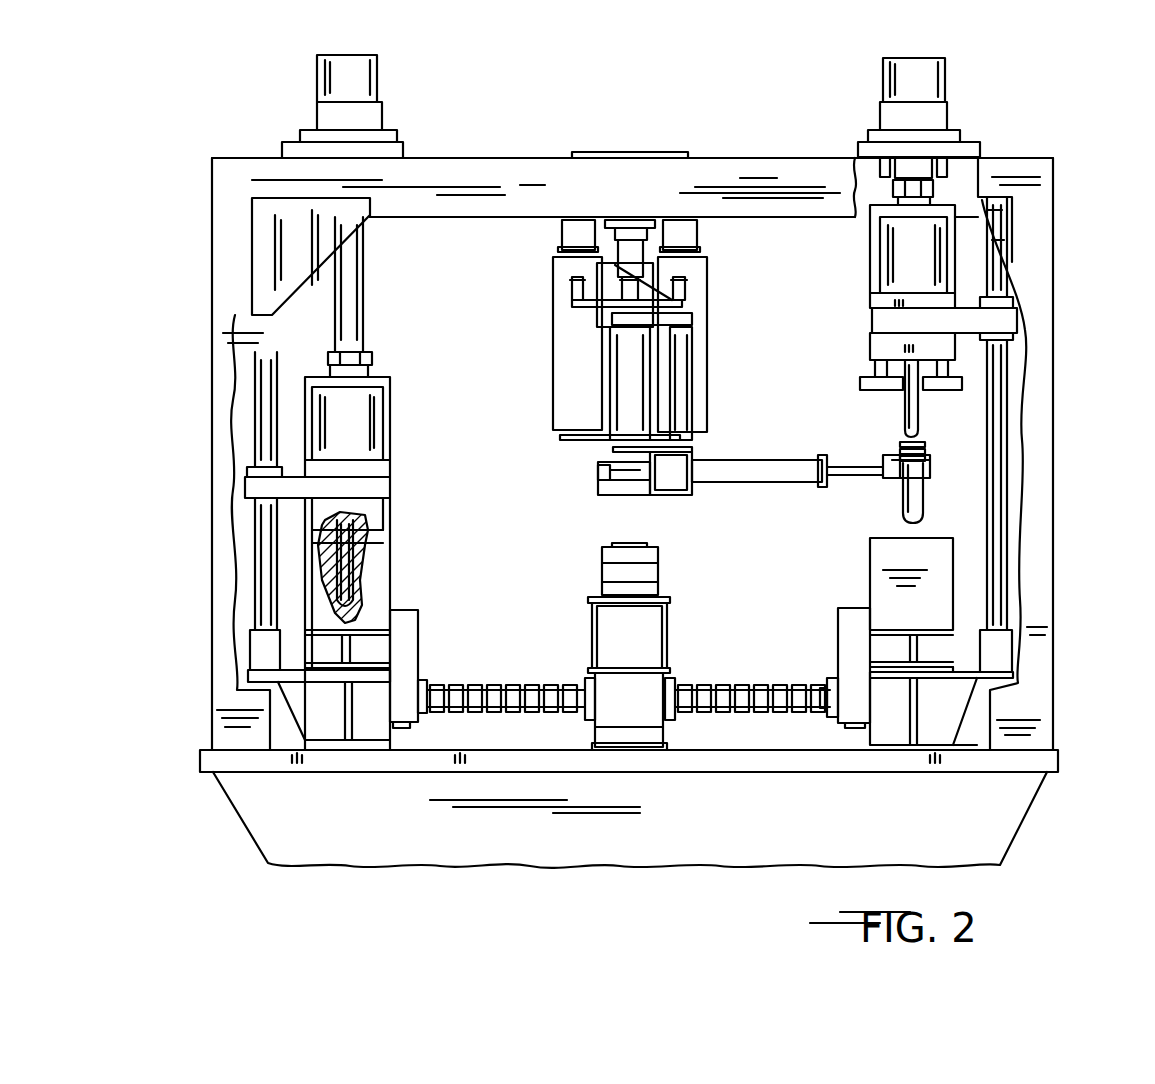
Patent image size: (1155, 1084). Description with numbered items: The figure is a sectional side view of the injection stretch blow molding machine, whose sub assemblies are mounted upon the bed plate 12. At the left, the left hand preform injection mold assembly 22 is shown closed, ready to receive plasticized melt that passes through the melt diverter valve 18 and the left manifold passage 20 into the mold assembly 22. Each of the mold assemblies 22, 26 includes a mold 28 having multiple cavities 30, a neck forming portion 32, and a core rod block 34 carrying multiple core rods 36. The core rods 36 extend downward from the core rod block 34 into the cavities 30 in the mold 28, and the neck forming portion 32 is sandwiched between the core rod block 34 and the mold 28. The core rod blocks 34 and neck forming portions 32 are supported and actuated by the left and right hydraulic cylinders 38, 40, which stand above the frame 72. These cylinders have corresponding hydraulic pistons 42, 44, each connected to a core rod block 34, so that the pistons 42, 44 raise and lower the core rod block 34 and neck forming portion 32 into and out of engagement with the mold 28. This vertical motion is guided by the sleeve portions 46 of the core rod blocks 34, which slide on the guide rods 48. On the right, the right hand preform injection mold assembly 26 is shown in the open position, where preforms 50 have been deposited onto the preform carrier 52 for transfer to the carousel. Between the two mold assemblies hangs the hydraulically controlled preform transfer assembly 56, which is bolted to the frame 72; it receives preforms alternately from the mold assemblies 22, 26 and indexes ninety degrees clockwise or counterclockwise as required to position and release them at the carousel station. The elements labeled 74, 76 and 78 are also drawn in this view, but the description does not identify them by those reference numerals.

The bed plate 12 is at (977, 772).
The melt diverter valve 18 is at (600, 573).
The left manifold passage 20 is at (515, 687).
The left hand preform injection mold assembly 22 is at (313, 559).
The right hand preform injection mold assembly 26 is at (960, 575).
The mold 28 is at (397, 553).
The cavities 30 is at (363, 588).
The neck forming portion 32 is at (380, 538).
The core rod block 34 is at (380, 513).
The core rods 36 is at (918, 415).
The left hydraulic cylinder 38 is at (377, 83).
The right hydraulic cylinder 40 is at (947, 83).
The hydraulic piston 42 is at (362, 267).
The hydraulic piston 44 is at (913, 167).
The sleeve portions 46 is at (373, 488).
The guide rods 48 is at (253, 400).
The preforms 50 is at (958, 487).
The preform carrier 52 is at (887, 482).
The preform transfer assembly 56 is at (715, 388).
The frame 72 is at (770, 158).
The gearbox 74 is at (357, 615).
The threaded finish 76 is at (900, 457).
The container body 78 is at (862, 487).